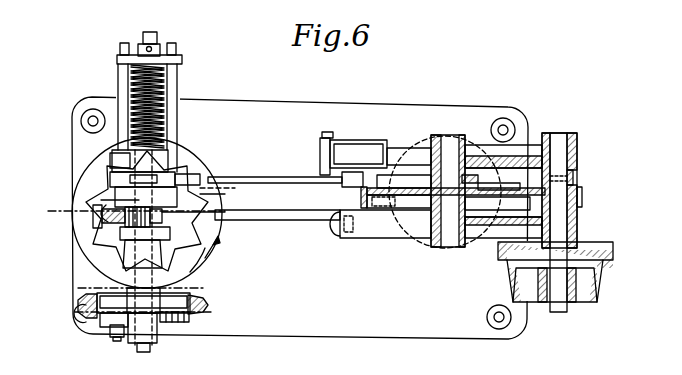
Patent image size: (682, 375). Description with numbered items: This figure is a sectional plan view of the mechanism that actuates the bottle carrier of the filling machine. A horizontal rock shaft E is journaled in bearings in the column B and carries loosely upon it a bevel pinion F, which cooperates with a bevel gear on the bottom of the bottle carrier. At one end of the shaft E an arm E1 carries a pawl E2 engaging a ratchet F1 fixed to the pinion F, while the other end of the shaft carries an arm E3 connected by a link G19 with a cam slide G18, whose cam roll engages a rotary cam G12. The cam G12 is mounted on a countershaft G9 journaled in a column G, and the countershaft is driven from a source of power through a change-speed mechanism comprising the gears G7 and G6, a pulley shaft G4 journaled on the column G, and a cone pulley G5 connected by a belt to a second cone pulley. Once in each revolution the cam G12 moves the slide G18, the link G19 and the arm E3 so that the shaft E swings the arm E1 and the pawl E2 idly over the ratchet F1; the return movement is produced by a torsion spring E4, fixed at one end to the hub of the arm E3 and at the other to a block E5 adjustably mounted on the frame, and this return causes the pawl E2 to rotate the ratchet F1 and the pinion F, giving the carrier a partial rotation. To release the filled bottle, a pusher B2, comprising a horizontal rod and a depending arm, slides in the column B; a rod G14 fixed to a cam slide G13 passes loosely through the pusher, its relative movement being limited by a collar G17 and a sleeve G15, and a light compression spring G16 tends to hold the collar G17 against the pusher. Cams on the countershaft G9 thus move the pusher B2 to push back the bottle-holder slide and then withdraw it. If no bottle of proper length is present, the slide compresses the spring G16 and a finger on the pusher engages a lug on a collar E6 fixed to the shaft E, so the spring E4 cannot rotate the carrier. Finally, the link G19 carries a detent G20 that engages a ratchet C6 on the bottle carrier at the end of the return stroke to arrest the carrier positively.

The horizontal shaft E is at (168, 204).
The arm E1 is at (115, 343).
The pawl E2 is at (107, 320).
The arm E3 is at (116, 158).
The torsion spring E4 is at (160, 92).
The block E5 is at (128, 67).
The collar E6 is at (215, 238).
The column B is at (147, 213).
The pusher B2 is at (110, 224).
The ratchet C6 is at (204, 254).
The bevel pinion F is at (203, 300).
The ratchet F1 is at (192, 318).
The column G is at (441, 136).
The pulley shaft G4 is at (557, 308).
The cone pulley G5 is at (582, 303).
The gear G6 is at (580, 201).
The gear G7 is at (472, 225).
The countershaft G9 is at (450, 142).
The rotary cam G12 is at (355, 192).
The cam slide G13 is at (363, 229).
The rod G14 is at (277, 221).
The sleeve G15 is at (142, 254).
The compression spring G16 is at (132, 209).
The collar G17 is at (90, 211).
The cam slide G18 is at (347, 148).
The link G19 is at (285, 170).
The detent G20 is at (221, 195).